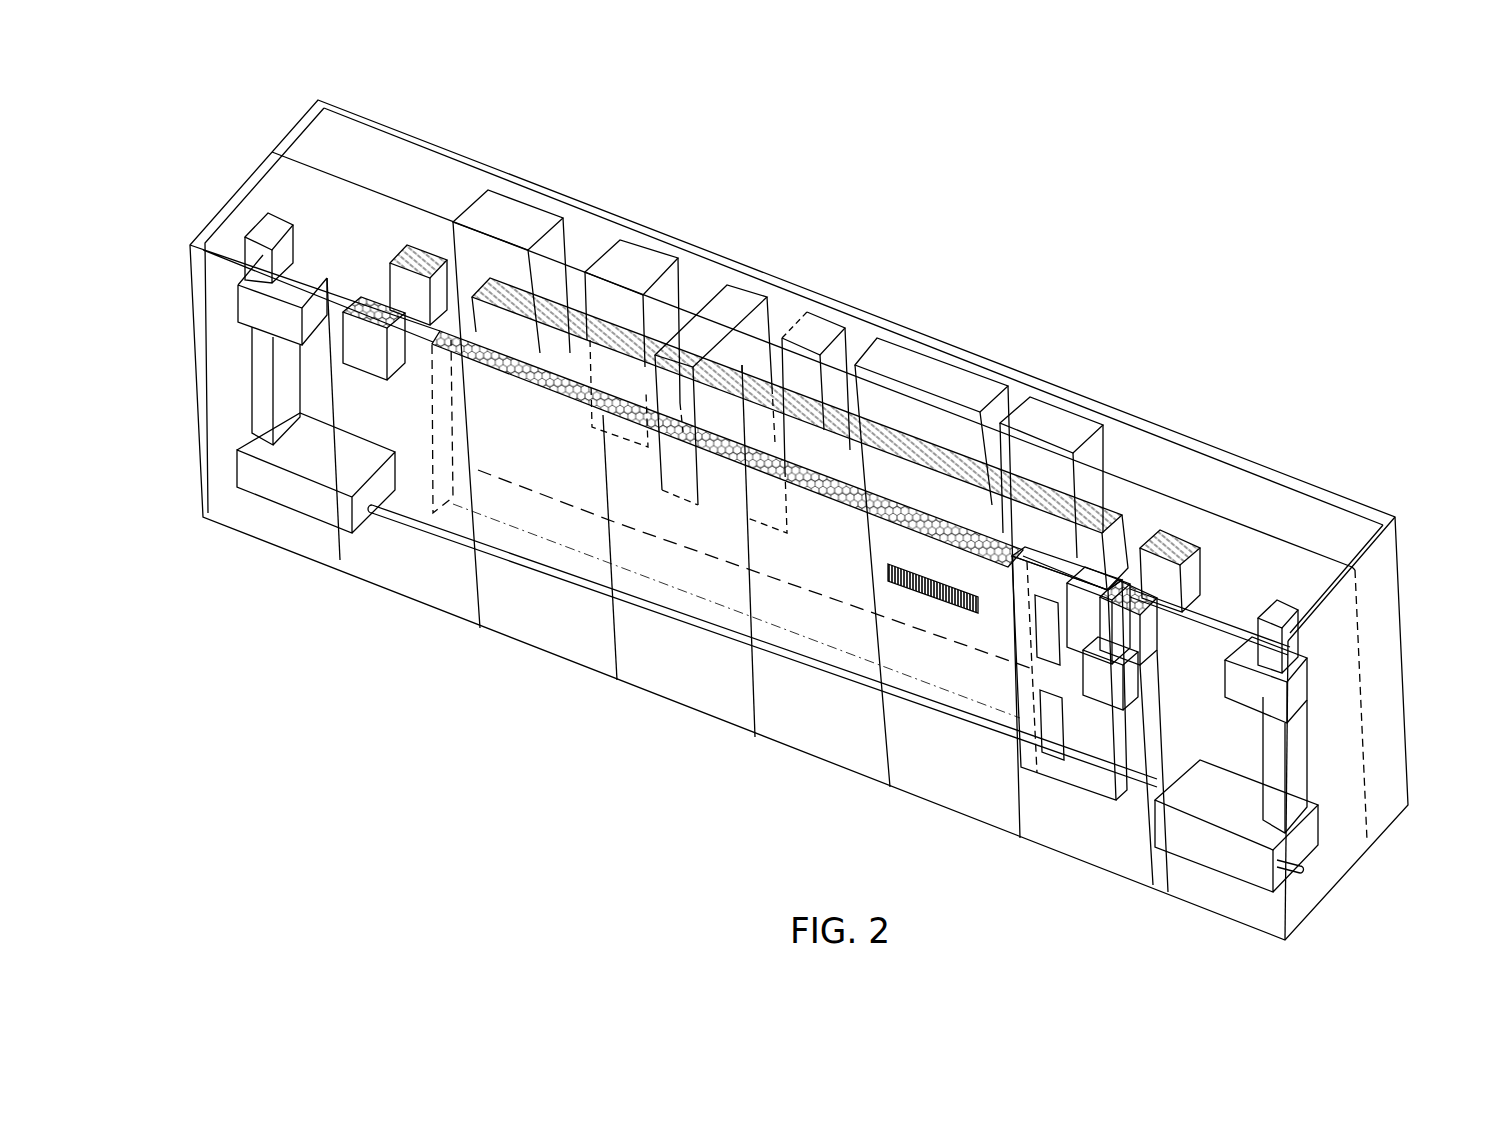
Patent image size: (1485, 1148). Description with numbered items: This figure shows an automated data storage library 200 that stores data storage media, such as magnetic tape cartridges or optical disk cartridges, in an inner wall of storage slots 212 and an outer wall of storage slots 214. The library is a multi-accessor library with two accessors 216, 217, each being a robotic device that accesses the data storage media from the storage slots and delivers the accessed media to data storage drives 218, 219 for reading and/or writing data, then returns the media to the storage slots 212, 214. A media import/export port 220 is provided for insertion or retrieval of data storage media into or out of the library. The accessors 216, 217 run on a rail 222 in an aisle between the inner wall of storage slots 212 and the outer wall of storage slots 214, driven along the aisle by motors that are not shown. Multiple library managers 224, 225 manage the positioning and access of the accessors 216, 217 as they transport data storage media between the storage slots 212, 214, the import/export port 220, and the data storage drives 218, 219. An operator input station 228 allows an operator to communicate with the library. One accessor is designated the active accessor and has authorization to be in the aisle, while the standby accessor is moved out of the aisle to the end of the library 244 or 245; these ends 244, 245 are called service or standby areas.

The automated data storage library 200 is at (976, 276).
The inner wall of storage slots 212 is at (580, 327).
The outer wall of storage slots 214 is at (432, 470).
The accessor 216 is at (257, 317).
The accessor 217 is at (1253, 690).
The data storage drive 218 is at (733, 298).
The data storage drive 219 is at (818, 328).
The media import/export port 220 is at (1092, 743).
The rail 222 is at (702, 640).
The library manager 224 is at (533, 220).
The library manager 225 is at (1060, 420).
The operator input station 228 is at (658, 250).
The end of the library 244 is at (222, 206).
The end of the library 245 is at (1398, 552).